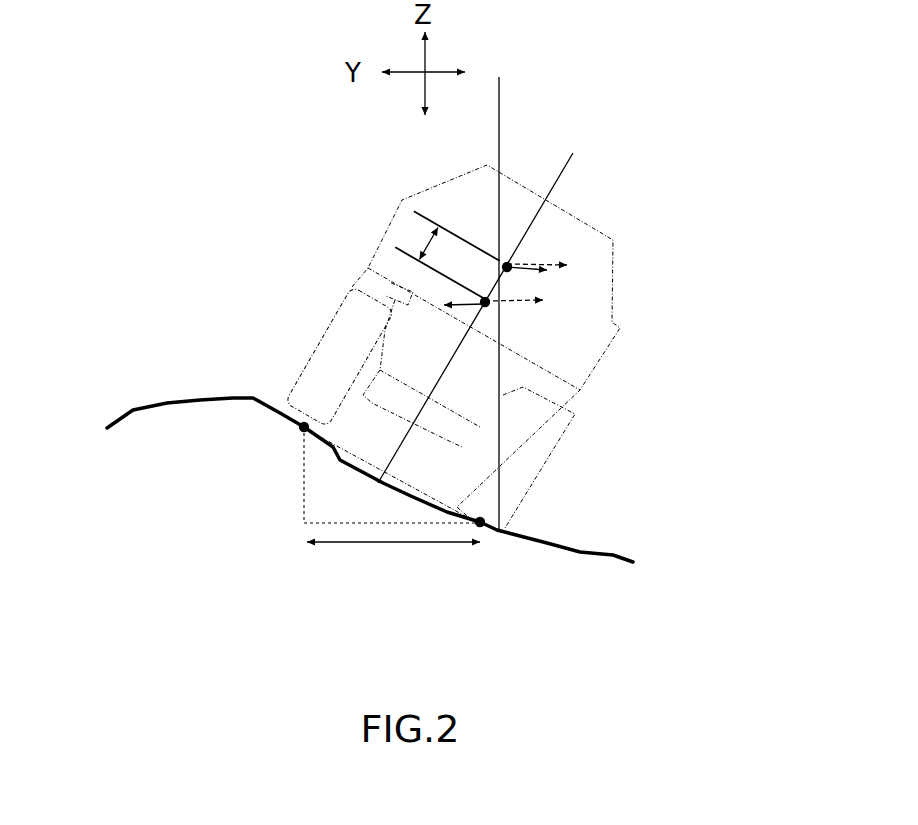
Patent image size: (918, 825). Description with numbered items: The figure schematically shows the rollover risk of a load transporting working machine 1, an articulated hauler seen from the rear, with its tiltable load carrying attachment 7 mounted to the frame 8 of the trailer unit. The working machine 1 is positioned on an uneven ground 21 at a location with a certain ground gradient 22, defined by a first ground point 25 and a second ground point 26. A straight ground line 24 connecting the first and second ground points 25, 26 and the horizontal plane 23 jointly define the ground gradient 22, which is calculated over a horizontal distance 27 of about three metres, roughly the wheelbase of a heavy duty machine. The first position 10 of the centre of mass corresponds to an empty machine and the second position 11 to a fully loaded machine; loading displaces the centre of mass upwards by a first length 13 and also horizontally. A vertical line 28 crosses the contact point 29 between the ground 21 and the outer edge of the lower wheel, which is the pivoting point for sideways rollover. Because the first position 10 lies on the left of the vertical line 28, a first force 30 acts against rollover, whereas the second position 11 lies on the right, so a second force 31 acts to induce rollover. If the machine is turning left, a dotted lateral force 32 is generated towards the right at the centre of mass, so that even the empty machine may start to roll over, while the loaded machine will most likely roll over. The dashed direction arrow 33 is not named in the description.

The working machine 1 is at (689, 87).
The load carrying attachment 7 is at (478, 200).
The frame 8 is at (430, 358).
The first position of the centre of mass 10 is at (485, 302).
The second position of the centre of mass 11 is at (507, 267).
The first length 13 is at (424, 246).
The ground 21 is at (552, 545).
The ground gradient 22 is at (445, 510).
The horizontal plane 23 is at (355, 523).
The straight ground line 24 is at (316, 443).
The first ground point 25 is at (480, 522).
The second ground point 26 is at (304, 427).
The horizontal distance 27 is at (470, 543).
The vertical line 28 is at (500, 102).
The contact point 29 is at (503, 528).
The first force 30 is at (470, 308).
The second force 31 is at (507, 267).
The lateral force 32 is at (545, 300).
The rotation direction 33 is at (553, 262).